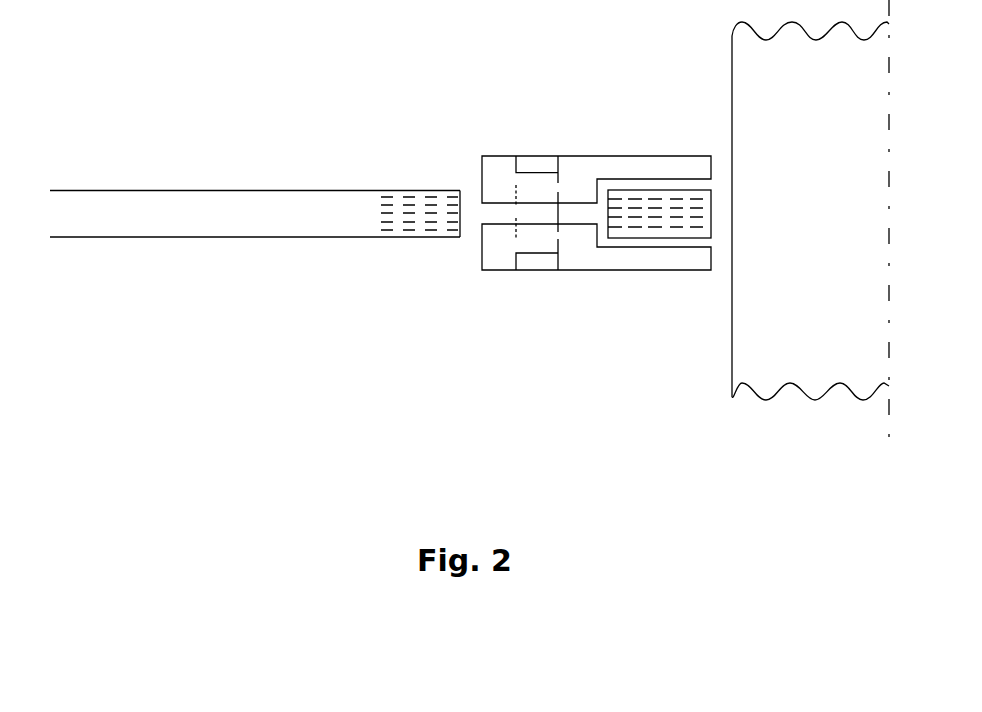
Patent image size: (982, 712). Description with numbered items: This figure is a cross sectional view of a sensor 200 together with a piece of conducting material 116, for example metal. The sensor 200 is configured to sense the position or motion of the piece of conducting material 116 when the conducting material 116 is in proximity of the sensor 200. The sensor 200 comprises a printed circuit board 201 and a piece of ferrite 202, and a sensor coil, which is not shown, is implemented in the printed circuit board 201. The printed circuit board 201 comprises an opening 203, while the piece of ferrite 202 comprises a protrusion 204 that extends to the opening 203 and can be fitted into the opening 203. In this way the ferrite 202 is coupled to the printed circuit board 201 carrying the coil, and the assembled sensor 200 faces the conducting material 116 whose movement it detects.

The sensor 200 is at (182, 110).
The printed circuit board 201 is at (158, 213).
The piece of ferrite 202 is at (503, 253).
The opening 203 is at (490, 210).
The protrusion 204 is at (585, 232).
The piece of conducting material 116 is at (800, 390).